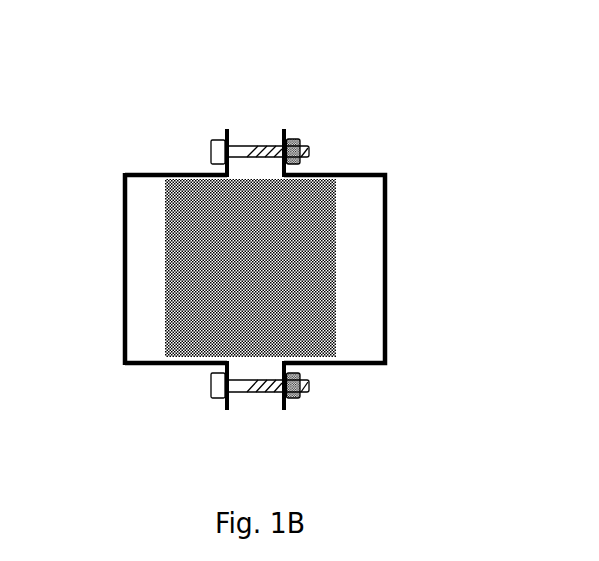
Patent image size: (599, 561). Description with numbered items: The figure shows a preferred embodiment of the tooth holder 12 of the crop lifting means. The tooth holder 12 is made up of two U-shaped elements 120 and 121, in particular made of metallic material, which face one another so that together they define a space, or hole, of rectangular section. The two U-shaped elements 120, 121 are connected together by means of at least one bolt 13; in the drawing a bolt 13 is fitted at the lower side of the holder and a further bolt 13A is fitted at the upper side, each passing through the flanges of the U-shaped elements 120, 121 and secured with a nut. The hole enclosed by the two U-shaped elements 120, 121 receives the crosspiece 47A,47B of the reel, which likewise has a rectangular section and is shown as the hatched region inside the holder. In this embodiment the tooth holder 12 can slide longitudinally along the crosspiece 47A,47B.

The tooth holder 12 is at (320, 110).
The U-shaped element 120 is at (387, 305).
The U-shaped element 121 is at (124, 286).
The crosspiece 47A,47B is at (299, 243).
The upper bolt fastener 13A is at (249, 141).
The bolt 13 is at (259, 393).